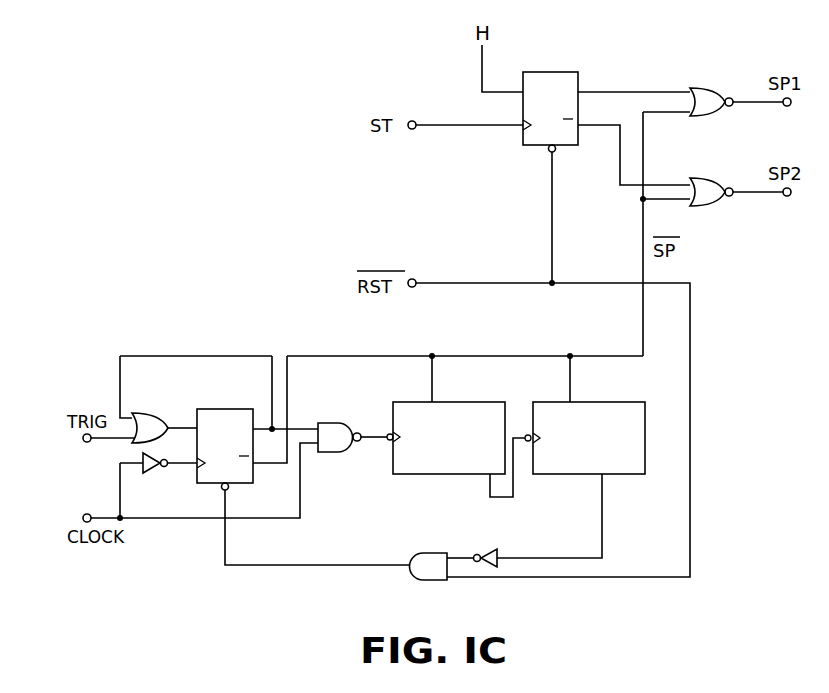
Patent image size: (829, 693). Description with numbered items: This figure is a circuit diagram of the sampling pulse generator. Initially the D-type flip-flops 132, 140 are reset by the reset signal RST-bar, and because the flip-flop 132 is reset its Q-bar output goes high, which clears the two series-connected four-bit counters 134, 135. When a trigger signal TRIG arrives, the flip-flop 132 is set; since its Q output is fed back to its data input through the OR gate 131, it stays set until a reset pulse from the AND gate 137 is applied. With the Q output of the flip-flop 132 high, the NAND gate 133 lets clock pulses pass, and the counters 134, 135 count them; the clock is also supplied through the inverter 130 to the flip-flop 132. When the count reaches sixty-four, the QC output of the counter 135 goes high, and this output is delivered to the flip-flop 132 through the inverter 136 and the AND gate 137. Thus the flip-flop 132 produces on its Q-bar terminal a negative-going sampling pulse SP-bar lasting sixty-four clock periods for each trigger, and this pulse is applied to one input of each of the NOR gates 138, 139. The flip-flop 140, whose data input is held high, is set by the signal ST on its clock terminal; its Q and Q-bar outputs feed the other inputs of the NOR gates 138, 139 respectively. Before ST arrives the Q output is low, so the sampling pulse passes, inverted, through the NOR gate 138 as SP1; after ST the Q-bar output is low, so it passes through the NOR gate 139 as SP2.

The inverter 130 is at (148, 471).
The OR gate 131 is at (146, 412).
The D-type flip-flop 132 is at (216, 409).
The NAND gate 133 is at (330, 423).
The 4-bit counter 134 is at (450, 402).
The 4-bit counter 135 is at (598, 402).
The inverter 136 is at (489, 548).
The AND gate 137 is at (428, 552).
The NOR gate 138 is at (700, 86).
The NOR gate 139 is at (700, 177).
The D-type flip-flop 140 is at (552, 72).